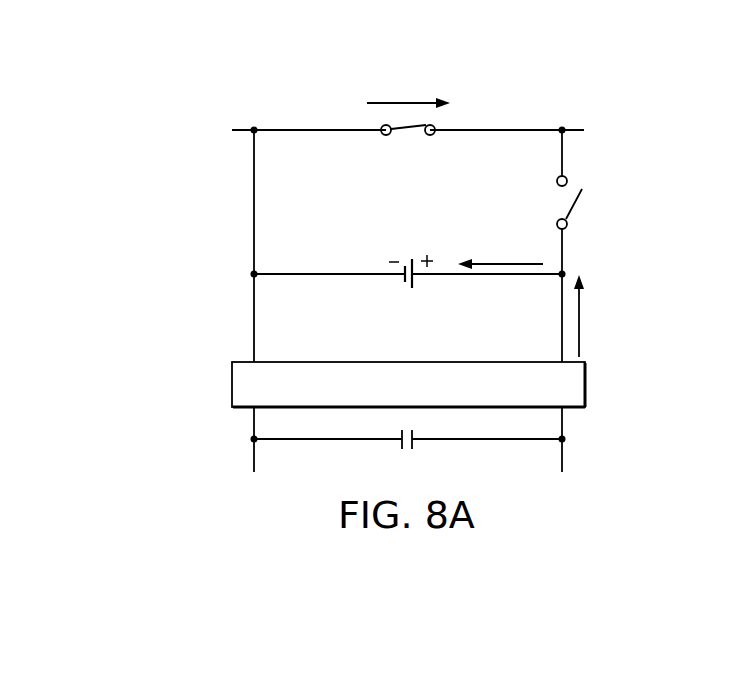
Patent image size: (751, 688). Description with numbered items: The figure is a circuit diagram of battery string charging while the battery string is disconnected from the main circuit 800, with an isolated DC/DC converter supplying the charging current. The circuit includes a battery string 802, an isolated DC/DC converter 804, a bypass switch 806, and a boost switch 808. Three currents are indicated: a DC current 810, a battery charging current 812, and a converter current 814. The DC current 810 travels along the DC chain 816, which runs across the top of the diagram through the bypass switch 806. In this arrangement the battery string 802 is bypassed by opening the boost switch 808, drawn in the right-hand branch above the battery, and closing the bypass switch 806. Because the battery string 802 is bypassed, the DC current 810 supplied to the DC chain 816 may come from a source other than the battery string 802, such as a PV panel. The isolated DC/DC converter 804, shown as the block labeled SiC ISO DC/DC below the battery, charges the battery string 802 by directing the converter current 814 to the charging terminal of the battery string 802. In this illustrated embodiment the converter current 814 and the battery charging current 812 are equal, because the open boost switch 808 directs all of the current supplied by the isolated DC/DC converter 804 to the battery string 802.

The battery string charging while connected 800 is at (484, 86).
The battery string 802 is at (408, 290).
The isolated DC/DC converter 804 is at (232, 385).
The bypass switch 806 is at (411, 137).
The boost switch 808 is at (580, 203).
The DC current 810 is at (382, 103).
The battery charging current 812 is at (499, 232).
The converter current 814 is at (663, 329).
The DC chain 816 is at (574, 130).